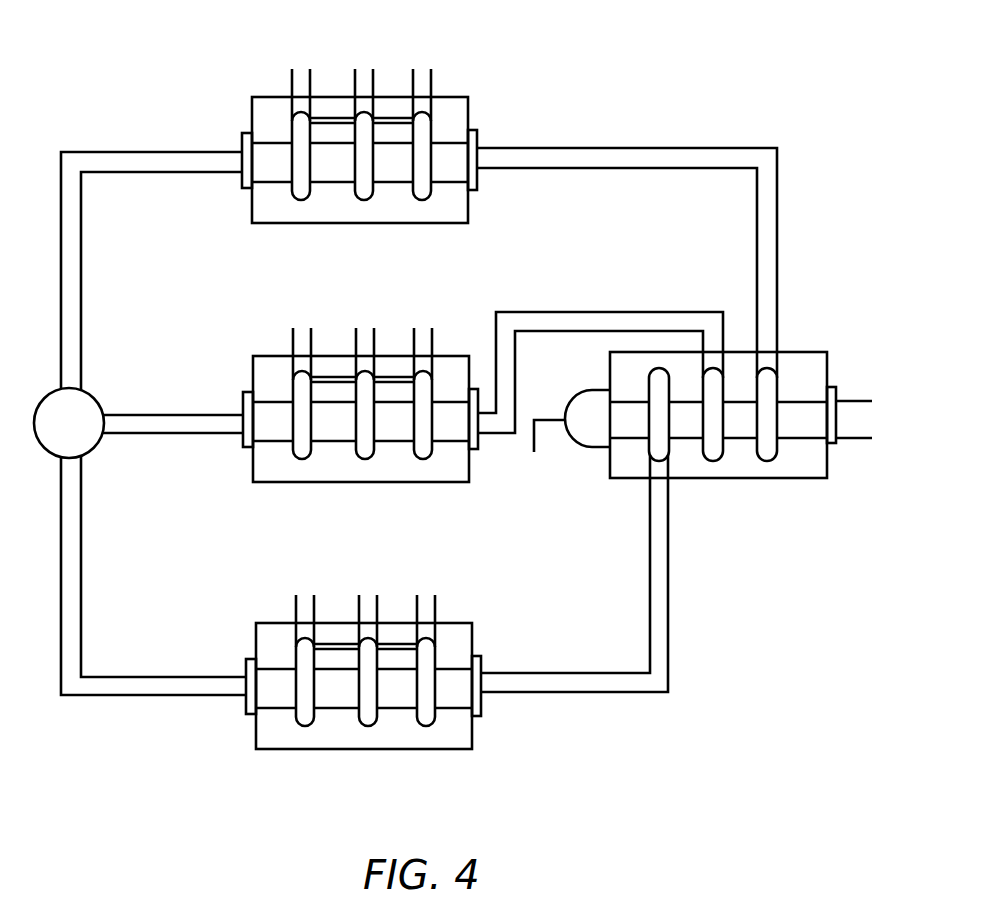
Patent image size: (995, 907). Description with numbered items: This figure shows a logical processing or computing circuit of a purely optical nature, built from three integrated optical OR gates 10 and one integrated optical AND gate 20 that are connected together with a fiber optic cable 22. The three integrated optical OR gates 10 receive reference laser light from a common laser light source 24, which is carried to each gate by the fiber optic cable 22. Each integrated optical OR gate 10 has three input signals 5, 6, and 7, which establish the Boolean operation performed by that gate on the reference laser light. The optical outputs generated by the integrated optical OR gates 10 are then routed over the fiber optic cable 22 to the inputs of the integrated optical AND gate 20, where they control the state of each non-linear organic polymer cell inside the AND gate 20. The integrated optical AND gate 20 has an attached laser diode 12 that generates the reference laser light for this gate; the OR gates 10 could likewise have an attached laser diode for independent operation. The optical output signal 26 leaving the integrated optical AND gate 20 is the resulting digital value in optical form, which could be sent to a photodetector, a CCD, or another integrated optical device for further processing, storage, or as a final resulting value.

The input signal 5 is at (301, 64).
The input signal 6 is at (364, 64).
The input signal 7 is at (422, 64).
The integrated optical OR gate 10 is at (463, 97).
The laser diode 12 is at (580, 447).
The integrated optical AND gate 20 is at (797, 478).
The fiber optic cable 22 is at (131, 151).
The laser light source 24 is at (92, 392).
The optical output signal 26 is at (844, 418).